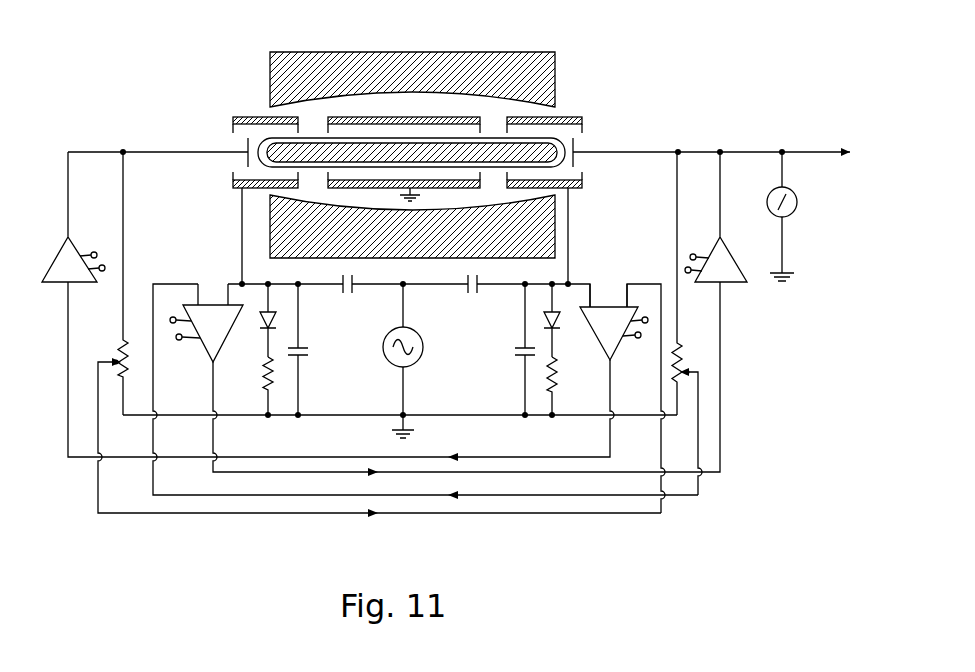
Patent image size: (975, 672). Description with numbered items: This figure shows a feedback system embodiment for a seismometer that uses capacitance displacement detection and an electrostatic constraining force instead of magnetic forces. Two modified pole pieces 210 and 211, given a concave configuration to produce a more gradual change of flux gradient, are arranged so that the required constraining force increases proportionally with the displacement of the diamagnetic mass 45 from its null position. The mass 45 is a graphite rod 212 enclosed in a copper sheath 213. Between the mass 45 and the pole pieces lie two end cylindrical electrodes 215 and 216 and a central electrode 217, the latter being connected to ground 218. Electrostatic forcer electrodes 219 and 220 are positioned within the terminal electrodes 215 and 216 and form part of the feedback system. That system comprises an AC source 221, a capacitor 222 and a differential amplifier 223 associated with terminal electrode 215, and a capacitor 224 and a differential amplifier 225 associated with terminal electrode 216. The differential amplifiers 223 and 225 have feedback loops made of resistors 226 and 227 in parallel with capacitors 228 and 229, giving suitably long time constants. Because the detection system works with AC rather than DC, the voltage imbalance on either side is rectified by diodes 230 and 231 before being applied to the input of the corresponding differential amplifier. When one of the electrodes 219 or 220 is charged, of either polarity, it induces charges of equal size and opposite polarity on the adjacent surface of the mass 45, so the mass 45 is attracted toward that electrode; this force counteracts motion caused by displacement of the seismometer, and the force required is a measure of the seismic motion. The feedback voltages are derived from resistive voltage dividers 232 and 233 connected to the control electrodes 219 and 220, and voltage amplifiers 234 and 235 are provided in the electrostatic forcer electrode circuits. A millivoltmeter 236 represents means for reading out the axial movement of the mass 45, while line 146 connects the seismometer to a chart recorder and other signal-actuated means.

The diamagnetic mass 45 is at (448, 145).
The line 146 is at (820, 151).
The modified pole piece 210 is at (329, 88).
The modified pole piece 211 is at (312, 251).
The graphite rod 212 is at (274, 146).
The copper sheath 213 is at (567, 120).
The end cylindrical electrode 215 is at (408, 116).
The end cylindrical electrode 216 is at (253, 117).
The central electrode 217 is at (393, 117).
The ground 218 is at (418, 200).
The electrostatic forcer electrode 219 is at (574, 147).
The electrostatic forcer electrode 220 is at (247, 147).
The AC source 221 is at (424, 353).
The capacitor 222 is at (475, 293).
The differential amplifier 223 is at (627, 327).
The capacitor 224 is at (347, 293).
The differential amplifier 225 is at (232, 327).
The resistor 226 is at (557, 393).
The resistor 227 is at (264, 383).
The capacitor 228 is at (518, 360).
The capacitor 229 is at (304, 359).
The diode 230 is at (554, 311).
The diode 231 is at (259, 311).
The resistive voltage divider 232 is at (687, 367).
The resistive voltage divider 233 is at (122, 348).
The voltage amplifier 234 is at (728, 273).
The voltage amplifier 235 is at (55, 252).
The millivoltmeter 236 is at (797, 207).